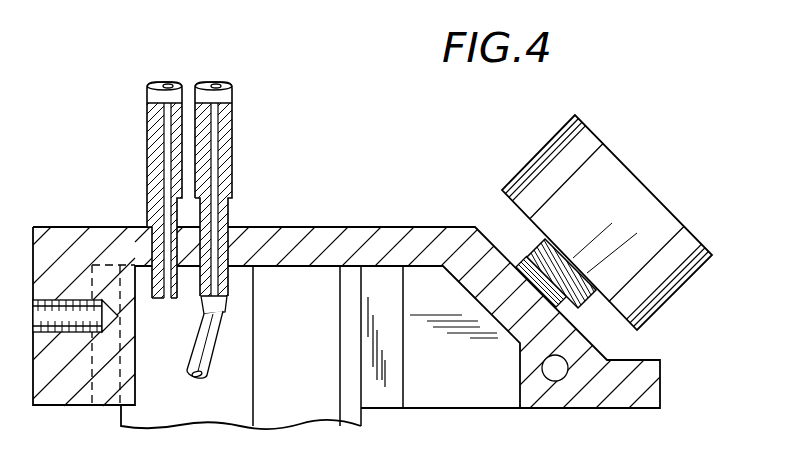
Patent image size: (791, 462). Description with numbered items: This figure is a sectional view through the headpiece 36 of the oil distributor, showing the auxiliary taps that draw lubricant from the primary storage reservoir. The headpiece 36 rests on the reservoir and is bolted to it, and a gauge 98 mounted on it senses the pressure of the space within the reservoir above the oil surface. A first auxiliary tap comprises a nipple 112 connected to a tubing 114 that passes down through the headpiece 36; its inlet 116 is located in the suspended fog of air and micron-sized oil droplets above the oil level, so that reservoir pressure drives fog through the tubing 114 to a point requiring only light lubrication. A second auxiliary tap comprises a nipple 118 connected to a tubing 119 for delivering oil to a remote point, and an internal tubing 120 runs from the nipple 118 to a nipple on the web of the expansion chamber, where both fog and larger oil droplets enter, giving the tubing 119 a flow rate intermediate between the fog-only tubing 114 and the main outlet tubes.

The headpiece 36 is at (287, 227).
The gauge 98 is at (676, 234).
The nipple 112 is at (132, 212).
The tubing 114 is at (147, 158).
The inlet 116 is at (163, 302).
The nipple 118 is at (223, 251).
The tubing 119 is at (232, 160).
The internal tubing 120 is at (182, 365).